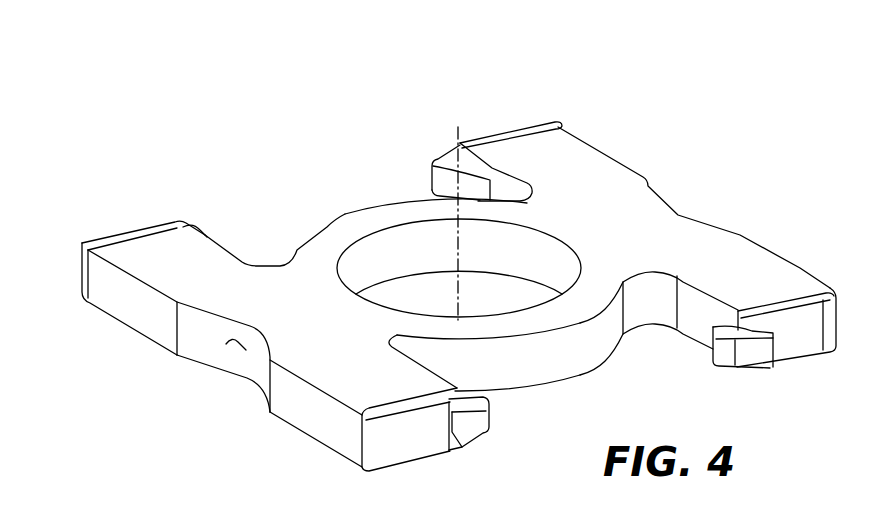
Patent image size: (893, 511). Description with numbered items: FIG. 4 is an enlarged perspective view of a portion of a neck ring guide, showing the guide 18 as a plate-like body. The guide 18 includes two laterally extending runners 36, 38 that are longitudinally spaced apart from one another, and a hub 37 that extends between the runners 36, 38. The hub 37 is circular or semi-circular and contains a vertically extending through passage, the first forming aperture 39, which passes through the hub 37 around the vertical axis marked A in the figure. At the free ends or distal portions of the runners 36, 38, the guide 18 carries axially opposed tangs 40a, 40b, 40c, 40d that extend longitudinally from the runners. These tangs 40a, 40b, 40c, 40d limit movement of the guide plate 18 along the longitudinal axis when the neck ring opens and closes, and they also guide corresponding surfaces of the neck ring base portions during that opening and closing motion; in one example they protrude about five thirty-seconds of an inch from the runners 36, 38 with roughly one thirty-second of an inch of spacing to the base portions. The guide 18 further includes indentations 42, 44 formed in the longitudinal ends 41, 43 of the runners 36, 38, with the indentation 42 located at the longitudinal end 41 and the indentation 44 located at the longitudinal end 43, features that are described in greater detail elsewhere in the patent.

The guide 18 is at (155, 83).
The runner 36 is at (110, 223).
The hub 37 is at (350, 198).
The runner 38 is at (478, 123).
The first forming aperture 39 is at (447, 306).
The tang 40a is at (205, 231).
The tang 40b is at (433, 163).
The tang 40c is at (486, 411).
The tang 40d is at (722, 353).
The longitudinal end 41 is at (310, 410).
The indentation 42 is at (229, 344).
The longitudinal end 43 is at (802, 273).
The indentation 44 is at (680, 215).